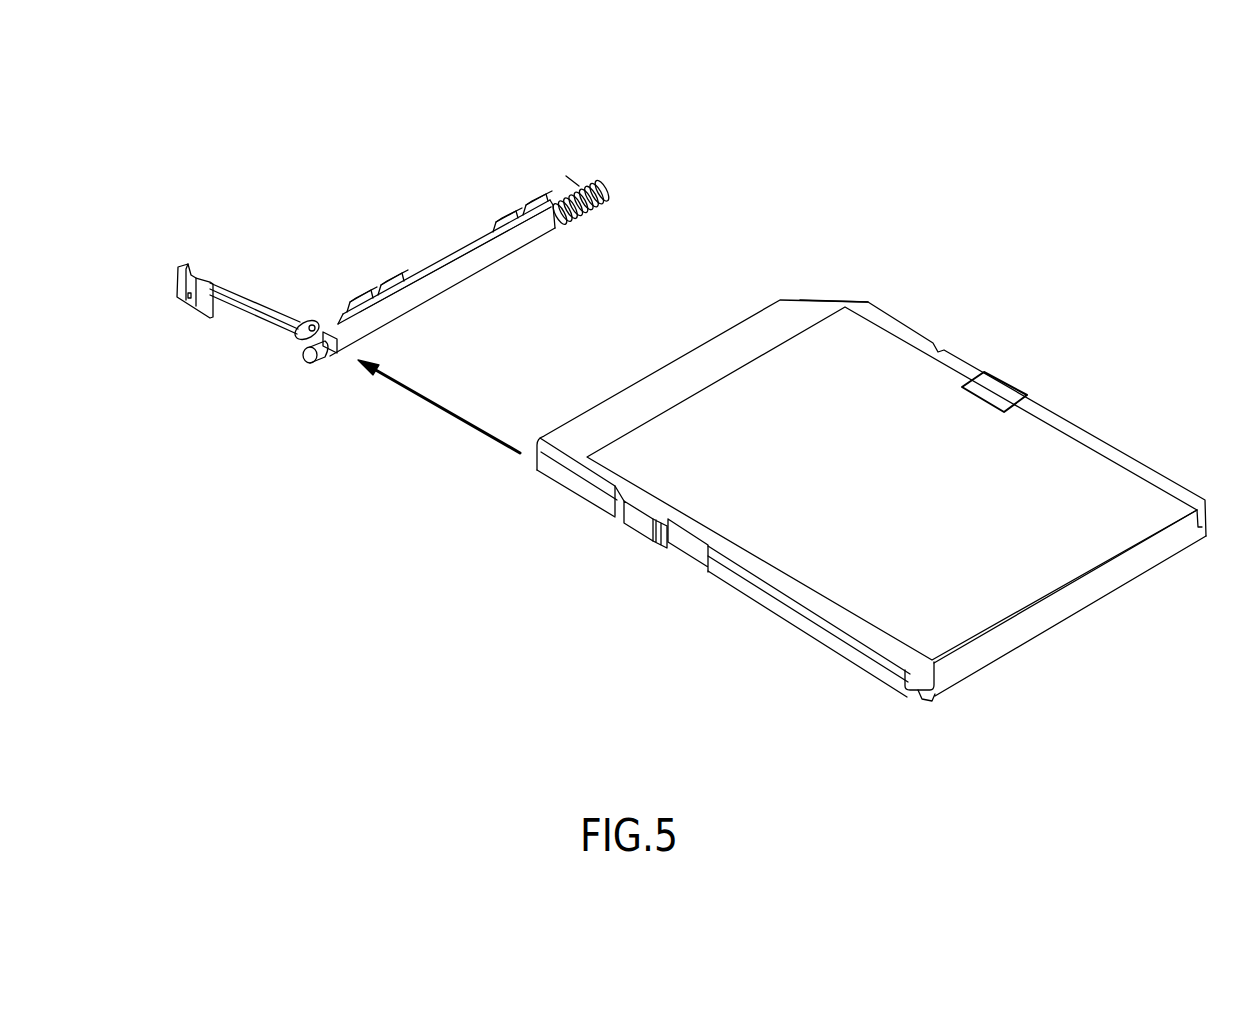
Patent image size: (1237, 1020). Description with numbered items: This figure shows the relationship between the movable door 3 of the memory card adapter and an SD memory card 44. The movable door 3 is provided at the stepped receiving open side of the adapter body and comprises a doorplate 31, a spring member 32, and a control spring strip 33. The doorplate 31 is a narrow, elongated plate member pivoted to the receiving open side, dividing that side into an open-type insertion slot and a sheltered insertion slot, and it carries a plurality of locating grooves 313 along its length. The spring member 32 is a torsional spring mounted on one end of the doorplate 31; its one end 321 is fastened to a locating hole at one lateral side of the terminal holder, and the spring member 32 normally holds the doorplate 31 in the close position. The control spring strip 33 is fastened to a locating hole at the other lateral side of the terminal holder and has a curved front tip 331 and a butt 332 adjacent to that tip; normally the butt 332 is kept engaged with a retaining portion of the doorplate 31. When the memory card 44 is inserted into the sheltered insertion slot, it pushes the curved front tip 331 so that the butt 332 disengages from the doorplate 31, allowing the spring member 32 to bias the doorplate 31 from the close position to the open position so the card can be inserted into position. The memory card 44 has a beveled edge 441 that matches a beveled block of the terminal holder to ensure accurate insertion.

The movable door 3 is at (423, 225).
The doorplate 31 is at (440, 287).
The locating grooves 313 is at (360, 297).
The spring member 32 is at (605, 190).
The one end of spring member 321 is at (569, 181).
The control spring strip 33 is at (248, 347).
The curved front tip 331 is at (327, 355).
The butt 332 is at (303, 322).
The SD memory card 44 is at (733, 587).
The beveled edge 441 is at (822, 299).